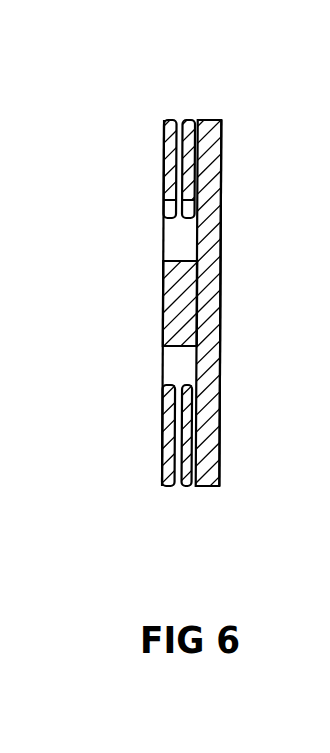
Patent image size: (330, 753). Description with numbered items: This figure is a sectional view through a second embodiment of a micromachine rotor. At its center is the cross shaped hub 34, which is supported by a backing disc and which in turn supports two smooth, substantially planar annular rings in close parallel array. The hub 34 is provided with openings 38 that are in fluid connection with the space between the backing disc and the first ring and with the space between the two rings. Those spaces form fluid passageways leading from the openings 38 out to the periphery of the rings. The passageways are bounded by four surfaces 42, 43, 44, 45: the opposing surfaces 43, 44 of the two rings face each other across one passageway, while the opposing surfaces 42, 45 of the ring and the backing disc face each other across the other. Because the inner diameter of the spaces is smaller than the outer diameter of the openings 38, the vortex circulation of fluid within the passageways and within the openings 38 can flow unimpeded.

The hub 34 is at (172, 305).
The openings 38 is at (178, 358).
The surface 42 is at (210, 123).
The surface 43 is at (166, 138).
The surface 44 is at (165, 170).
The surface 45 is at (222, 158).